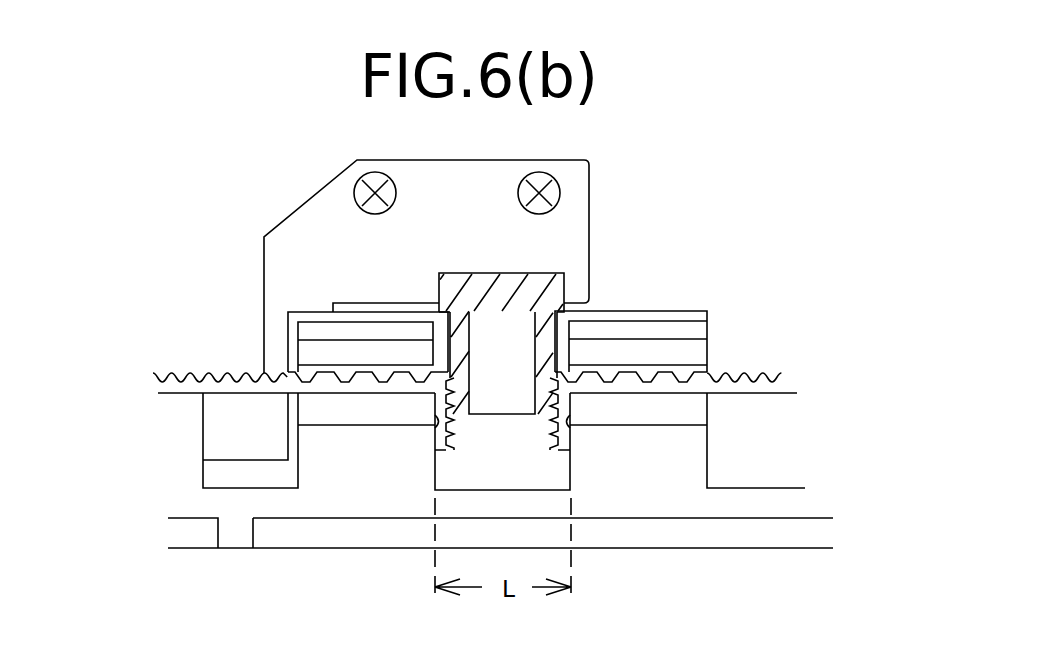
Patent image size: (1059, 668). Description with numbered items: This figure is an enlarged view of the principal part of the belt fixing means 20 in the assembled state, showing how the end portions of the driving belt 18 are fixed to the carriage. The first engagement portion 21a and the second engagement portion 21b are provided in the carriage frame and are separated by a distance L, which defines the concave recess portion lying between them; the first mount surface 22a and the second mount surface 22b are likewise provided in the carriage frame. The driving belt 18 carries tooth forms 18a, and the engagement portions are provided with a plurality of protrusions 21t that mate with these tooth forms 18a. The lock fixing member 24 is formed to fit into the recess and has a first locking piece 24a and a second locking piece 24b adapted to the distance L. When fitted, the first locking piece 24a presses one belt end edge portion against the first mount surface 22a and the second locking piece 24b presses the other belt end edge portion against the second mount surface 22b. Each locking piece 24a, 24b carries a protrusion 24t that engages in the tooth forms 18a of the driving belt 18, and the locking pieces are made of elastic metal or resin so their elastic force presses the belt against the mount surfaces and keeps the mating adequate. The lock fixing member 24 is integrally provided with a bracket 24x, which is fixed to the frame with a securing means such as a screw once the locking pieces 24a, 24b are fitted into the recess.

The belt fixing means 20 is at (702, 205).
The bracket 24x is at (321, 236).
The lock fixing member 24 is at (542, 282).
The first locking piece 24a is at (463, 362).
The second locking piece 24b is at (547, 343).
The protrusion 24t is at (553, 403).
The first engagement portion 21a is at (327, 349).
The second engagement portion 21b is at (695, 350).
The protrusions 21t is at (323, 380).
The driving belt 18 is at (750, 378).
The tooth forms 18a is at (557, 418).
The first mount surface 22a is at (437, 425).
The second mount surface 22b is at (568, 423).